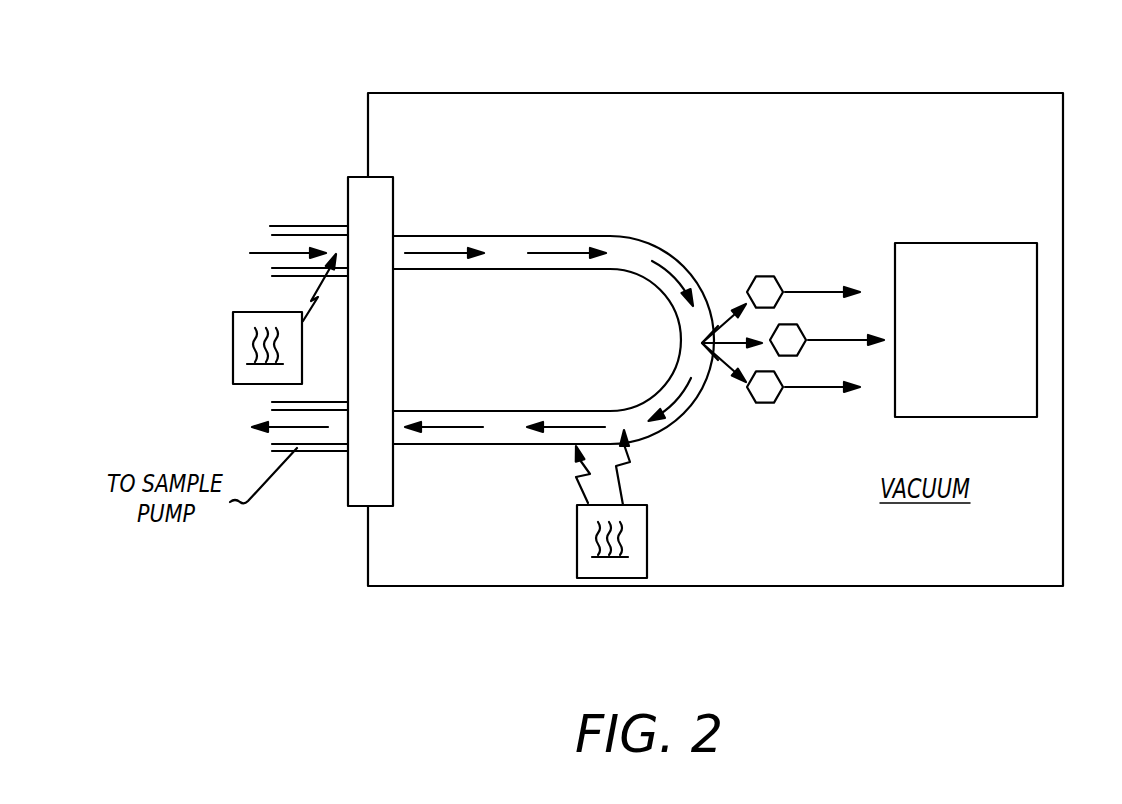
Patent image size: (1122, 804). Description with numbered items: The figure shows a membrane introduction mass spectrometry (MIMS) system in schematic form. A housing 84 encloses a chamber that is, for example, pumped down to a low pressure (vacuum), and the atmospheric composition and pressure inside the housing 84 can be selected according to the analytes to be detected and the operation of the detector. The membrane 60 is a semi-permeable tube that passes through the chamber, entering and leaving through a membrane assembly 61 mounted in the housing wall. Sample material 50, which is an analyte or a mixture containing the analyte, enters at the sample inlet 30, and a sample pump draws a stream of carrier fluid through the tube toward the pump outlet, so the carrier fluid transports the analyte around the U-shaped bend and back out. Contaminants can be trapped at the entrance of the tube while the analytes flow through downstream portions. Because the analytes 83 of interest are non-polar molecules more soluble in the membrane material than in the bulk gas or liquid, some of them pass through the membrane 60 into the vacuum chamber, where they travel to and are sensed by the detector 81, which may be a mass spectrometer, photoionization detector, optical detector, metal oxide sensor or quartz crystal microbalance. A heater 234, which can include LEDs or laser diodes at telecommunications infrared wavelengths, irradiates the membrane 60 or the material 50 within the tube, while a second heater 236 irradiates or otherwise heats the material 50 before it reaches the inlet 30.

The inlet 30 is at (297, 232).
The material 50 is at (622, 415).
The membrane 60 is at (660, 240).
The membrane assembly 61 is at (360, 190).
The detector 81 is at (976, 394).
The analytes 83 is at (763, 280).
The housing 84 is at (787, 587).
The heater 234 is at (578, 517).
The heater 236 is at (232, 320).